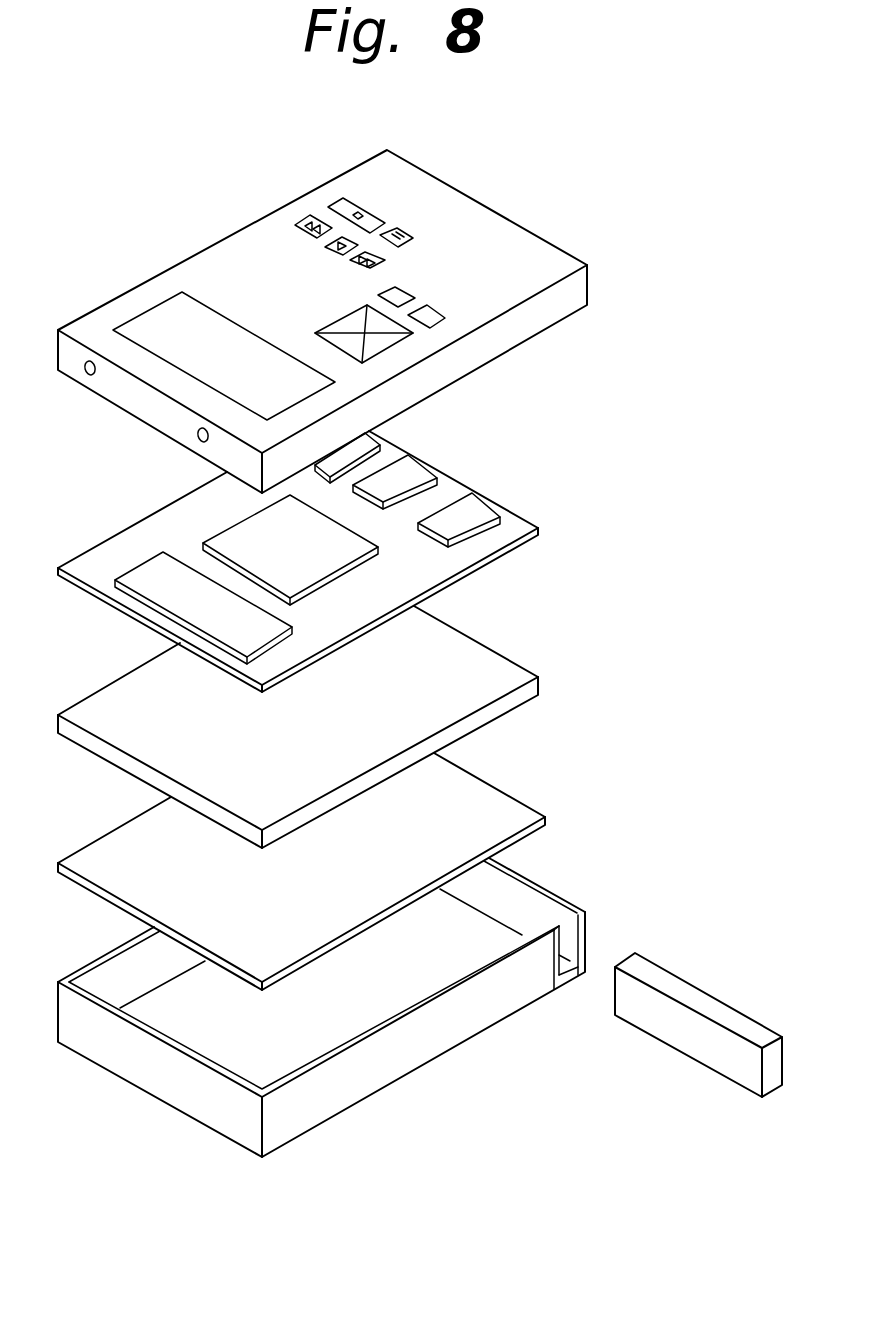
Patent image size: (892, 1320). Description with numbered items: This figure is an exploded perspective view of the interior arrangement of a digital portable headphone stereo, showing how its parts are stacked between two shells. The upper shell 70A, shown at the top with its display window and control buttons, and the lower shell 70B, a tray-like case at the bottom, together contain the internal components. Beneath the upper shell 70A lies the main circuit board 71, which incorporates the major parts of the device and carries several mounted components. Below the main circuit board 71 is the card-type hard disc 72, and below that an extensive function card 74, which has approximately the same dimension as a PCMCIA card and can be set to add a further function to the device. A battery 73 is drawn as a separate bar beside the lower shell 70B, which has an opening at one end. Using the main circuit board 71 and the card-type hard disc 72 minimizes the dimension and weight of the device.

The shell 70A is at (578, 295).
The main circuit board 71 is at (517, 527).
The card-type hard disc 72 is at (510, 677).
The extensive function card 74 is at (515, 813).
The shell 70B is at (480, 1015).
The battery 73 is at (633, 1012).